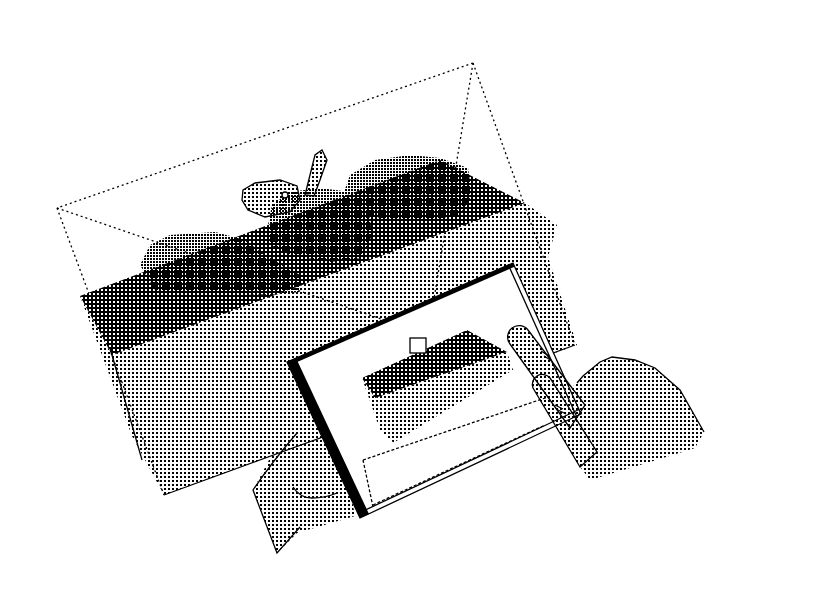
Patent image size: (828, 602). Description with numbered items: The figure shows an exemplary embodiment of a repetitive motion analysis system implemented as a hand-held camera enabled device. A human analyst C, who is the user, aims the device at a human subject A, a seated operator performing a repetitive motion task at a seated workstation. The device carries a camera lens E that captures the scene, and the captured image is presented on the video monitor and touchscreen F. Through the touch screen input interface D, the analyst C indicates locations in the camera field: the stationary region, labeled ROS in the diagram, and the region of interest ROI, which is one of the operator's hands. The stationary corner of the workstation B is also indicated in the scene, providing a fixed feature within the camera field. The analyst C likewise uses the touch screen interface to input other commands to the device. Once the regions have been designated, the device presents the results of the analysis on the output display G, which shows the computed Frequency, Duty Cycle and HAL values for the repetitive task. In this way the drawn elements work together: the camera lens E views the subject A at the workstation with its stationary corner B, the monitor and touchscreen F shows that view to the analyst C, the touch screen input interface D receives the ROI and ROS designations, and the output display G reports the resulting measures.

The human subject A is at (310, 188).
The stationary corner of the workstation B is at (311, 279).
The human analyst C is at (606, 403).
The touch screen input interface D is at (443, 377).
The camera lens E is at (328, 325).
The video monitor and touchscreen F is at (448, 372).
The output display G is at (455, 452).
The region of interest ROI is at (433, 337).
The stationary region ROS is at (362, 371).